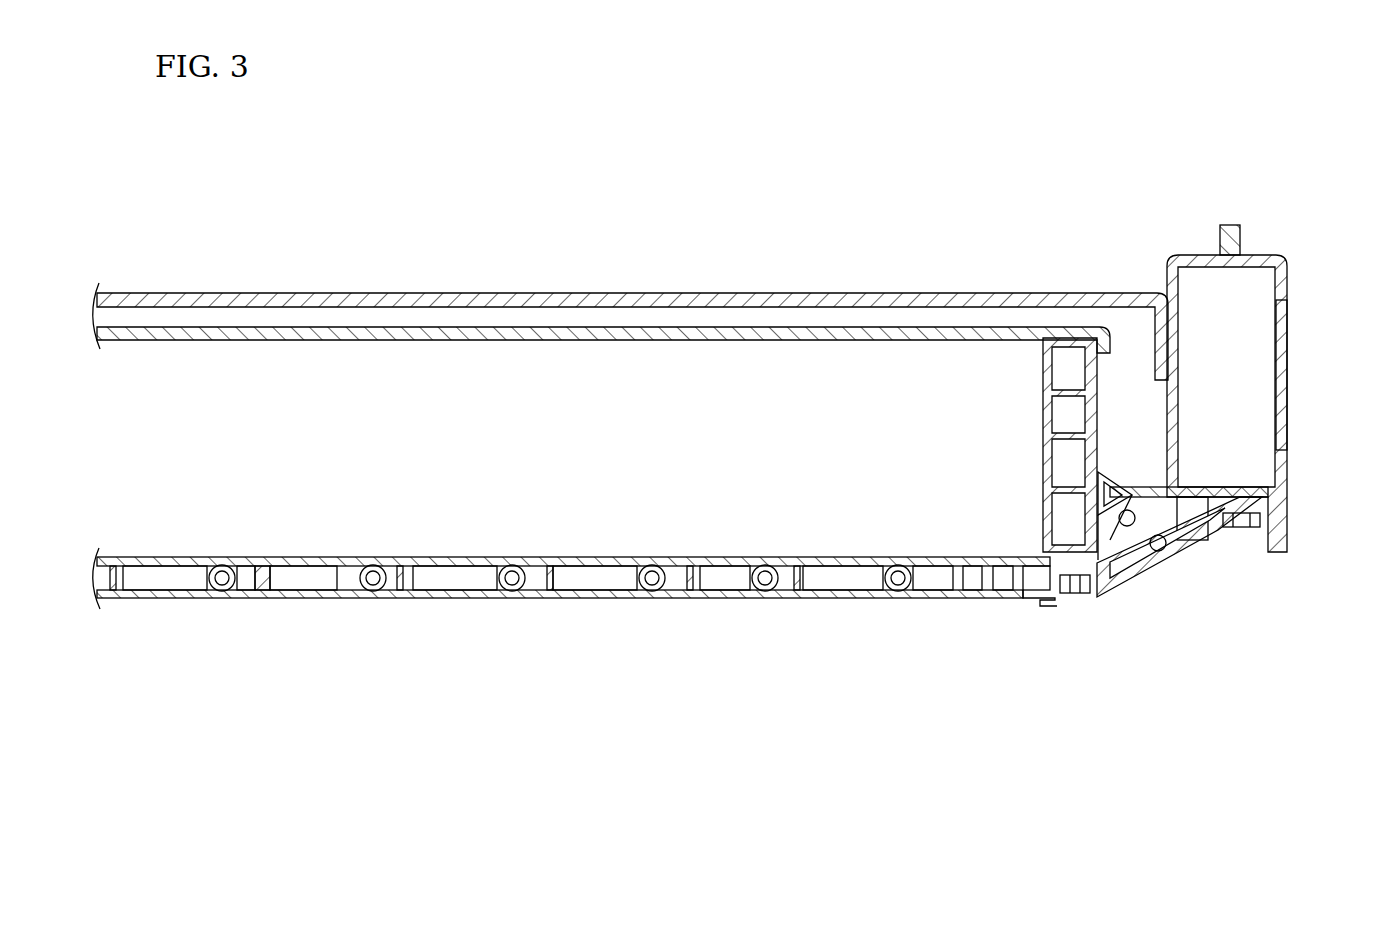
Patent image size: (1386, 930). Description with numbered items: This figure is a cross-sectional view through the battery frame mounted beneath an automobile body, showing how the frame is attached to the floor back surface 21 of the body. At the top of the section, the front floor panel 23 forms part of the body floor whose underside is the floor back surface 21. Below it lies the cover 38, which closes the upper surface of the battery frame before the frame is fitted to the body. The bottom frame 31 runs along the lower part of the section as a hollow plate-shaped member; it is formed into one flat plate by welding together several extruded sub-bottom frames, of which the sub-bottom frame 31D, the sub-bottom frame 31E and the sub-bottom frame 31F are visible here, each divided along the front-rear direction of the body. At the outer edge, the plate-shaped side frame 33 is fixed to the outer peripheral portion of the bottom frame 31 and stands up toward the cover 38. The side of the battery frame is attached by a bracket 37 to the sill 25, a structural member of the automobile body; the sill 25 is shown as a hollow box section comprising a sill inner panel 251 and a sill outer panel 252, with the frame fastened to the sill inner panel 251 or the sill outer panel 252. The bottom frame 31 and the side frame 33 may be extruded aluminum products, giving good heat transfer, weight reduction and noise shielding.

The floor back surface 21 is at (615, 311).
The front floor panel 23 is at (688, 293).
The cover 38 is at (765, 342).
The sills 25 is at (1284, 262).
The sill inner panel 251 is at (1197, 255).
The sill outer panel 252 is at (1290, 340).
The side frame 33 is at (1043, 416).
The bracket 37 is at (1175, 548).
The bottom frame 31 is at (591, 590).
The sub-bottom frame 31D is at (180, 557).
The sub-bottom frame 31E is at (530, 557).
The sub-bottom frame 31F is at (853, 557).